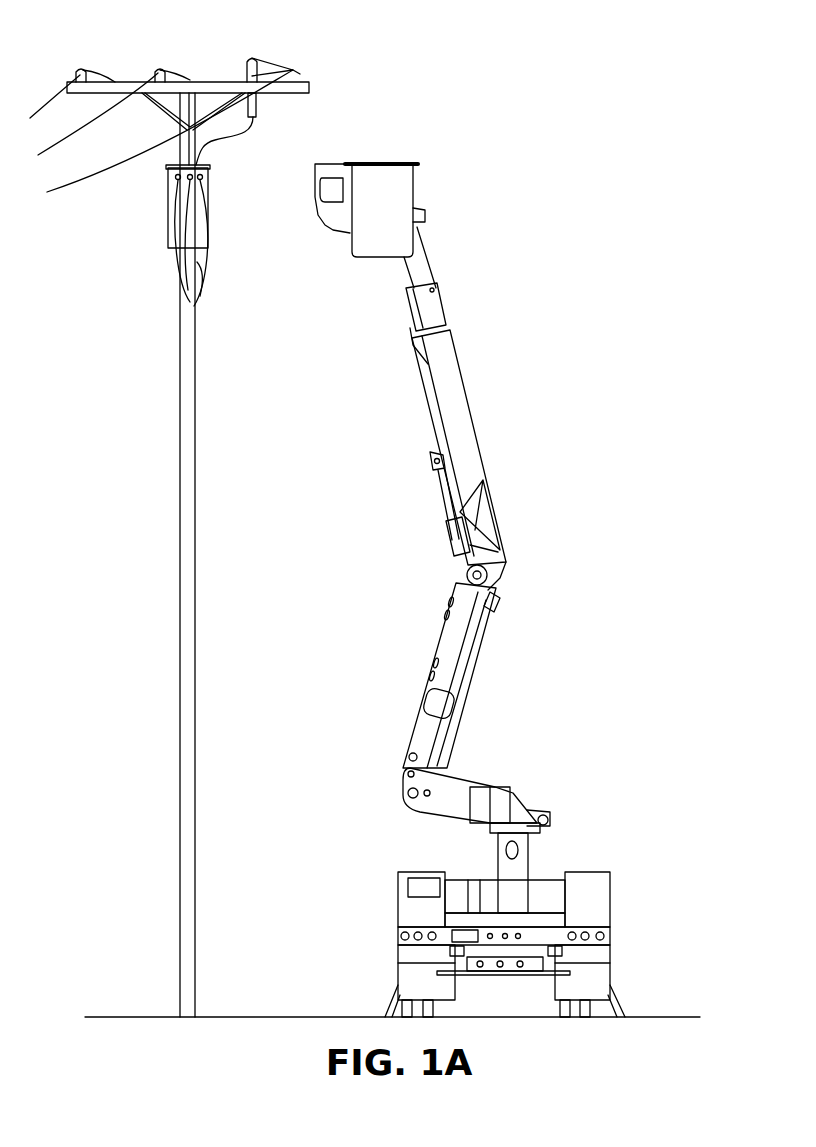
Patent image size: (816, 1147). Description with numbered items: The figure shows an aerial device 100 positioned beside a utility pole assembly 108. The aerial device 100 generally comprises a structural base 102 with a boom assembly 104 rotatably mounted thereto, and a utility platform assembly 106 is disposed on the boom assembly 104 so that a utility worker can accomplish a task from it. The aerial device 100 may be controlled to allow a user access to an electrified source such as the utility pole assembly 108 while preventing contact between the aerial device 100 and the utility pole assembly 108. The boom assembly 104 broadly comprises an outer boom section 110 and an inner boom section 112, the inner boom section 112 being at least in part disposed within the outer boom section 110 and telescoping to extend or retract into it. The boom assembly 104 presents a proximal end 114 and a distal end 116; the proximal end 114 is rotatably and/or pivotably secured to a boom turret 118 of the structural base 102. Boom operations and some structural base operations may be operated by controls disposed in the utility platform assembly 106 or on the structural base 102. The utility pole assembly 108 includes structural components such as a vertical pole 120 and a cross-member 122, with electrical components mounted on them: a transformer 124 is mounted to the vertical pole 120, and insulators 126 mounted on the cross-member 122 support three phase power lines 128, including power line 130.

The aerial device 100 is at (448, 90).
The structural base 102 is at (615, 866).
The boom assembly 104 is at (518, 456).
The utility platform assembly 106 is at (440, 185).
The utility pole assembly 108 is at (120, 46).
The outer boom section 110 is at (452, 357).
The inner boom section 112 is at (417, 248).
The proximal end 114 is at (520, 780).
The distal end 116 is at (380, 285).
The boom turret 118 is at (530, 856).
The vertical pole 120 is at (180, 339).
The cross-member 122 is at (217, 82).
The transformer 124 is at (208, 195).
The insulators 126 is at (160, 72).
The three phase power lines 128 is at (127, 194).
The power line 130 is at (65, 192).